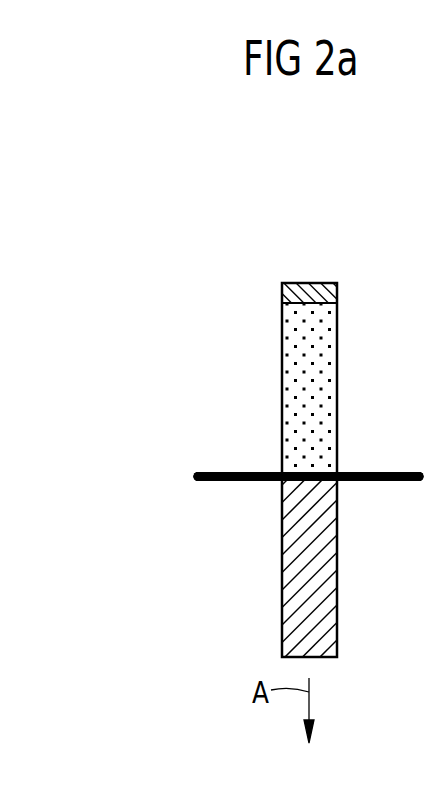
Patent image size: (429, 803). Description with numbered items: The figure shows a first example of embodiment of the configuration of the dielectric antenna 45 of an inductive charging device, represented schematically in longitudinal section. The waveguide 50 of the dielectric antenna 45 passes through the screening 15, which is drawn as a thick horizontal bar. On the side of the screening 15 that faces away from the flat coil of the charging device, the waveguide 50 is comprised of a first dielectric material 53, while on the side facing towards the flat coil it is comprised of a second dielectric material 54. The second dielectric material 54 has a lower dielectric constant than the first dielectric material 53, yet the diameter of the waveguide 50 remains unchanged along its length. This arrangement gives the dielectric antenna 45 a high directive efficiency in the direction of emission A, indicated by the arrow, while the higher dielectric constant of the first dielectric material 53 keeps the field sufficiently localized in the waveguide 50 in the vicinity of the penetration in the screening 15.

The dielectric antenna 45 is at (240, 288).
The first dielectric material 53 is at (315, 387).
The second dielectric material 54 is at (315, 566).
The waveguide 50 is at (267, 455).
The screening 15 is at (212, 482).